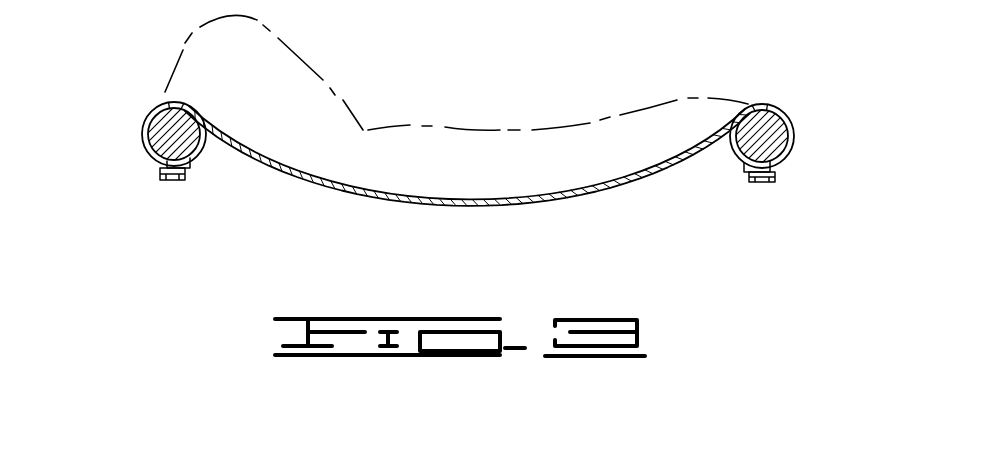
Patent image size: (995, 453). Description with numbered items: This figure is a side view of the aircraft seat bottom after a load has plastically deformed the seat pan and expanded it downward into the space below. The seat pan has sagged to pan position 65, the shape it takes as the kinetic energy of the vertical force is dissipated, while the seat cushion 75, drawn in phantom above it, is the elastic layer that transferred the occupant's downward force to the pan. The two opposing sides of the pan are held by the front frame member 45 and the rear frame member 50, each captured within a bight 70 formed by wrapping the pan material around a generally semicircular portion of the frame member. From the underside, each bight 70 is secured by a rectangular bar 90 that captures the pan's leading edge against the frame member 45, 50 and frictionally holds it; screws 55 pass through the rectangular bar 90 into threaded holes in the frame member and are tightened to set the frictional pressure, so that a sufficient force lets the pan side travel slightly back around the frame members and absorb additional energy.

The front frame member 45 is at (170, 124).
The rear frame member 50 is at (767, 128).
The screws 55 is at (174, 180).
The pan position 65 is at (470, 207).
The bight 70 is at (141, 140).
The seat cushion 75 is at (448, 138).
The rectangular bar 90 is at (158, 169).